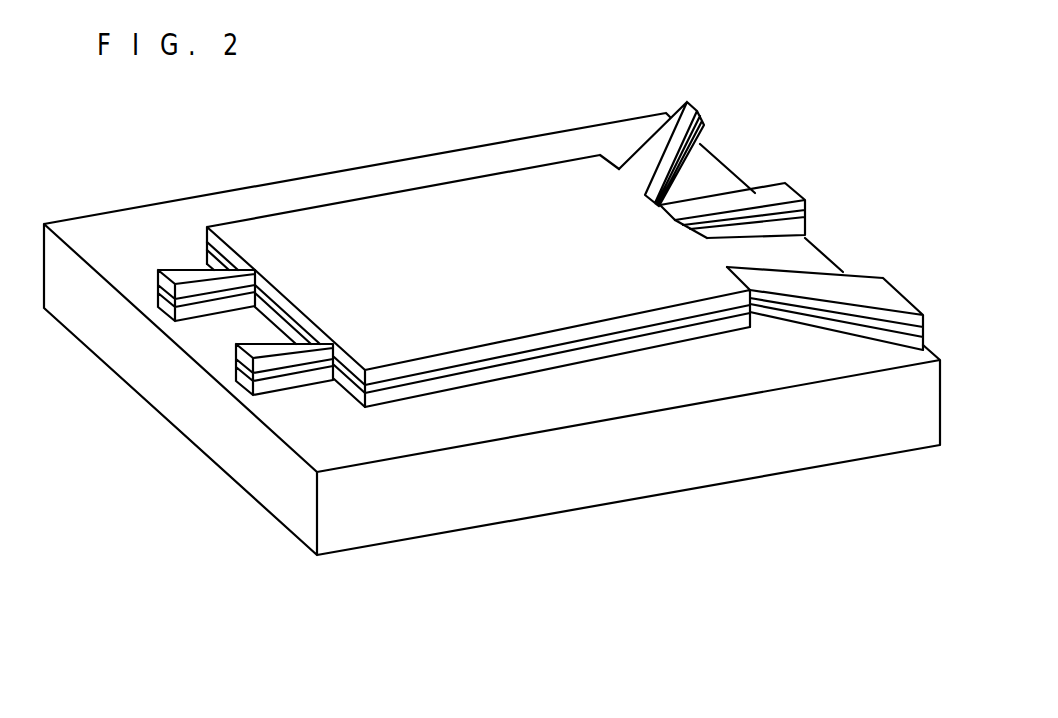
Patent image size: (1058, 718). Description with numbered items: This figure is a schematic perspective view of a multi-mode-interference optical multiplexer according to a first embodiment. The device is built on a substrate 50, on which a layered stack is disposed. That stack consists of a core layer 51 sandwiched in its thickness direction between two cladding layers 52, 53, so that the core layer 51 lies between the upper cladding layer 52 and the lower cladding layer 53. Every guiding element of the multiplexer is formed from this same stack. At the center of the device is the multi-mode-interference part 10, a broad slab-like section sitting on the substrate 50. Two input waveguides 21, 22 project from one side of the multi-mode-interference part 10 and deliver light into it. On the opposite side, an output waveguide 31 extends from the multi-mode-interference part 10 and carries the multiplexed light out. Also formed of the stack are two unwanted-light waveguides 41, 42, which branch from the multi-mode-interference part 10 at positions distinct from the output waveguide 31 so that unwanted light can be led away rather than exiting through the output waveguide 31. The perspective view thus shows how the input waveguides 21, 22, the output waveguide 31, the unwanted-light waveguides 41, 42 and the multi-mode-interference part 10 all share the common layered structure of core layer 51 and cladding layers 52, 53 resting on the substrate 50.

The multi-mode-interference part 10 is at (397, 215).
The input waveguide 21 is at (238, 255).
The input waveguide 22 is at (240, 349).
The output waveguide 31 is at (775, 193).
The unwanted-light waveguide 41 is at (687, 114).
The unwanted-light waveguide 42 is at (878, 292).
The substrate 50 is at (530, 492).
The core layer 51 is at (364, 389).
The cladding layer 52 is at (365, 377).
The cladding layer 53 is at (366, 407).